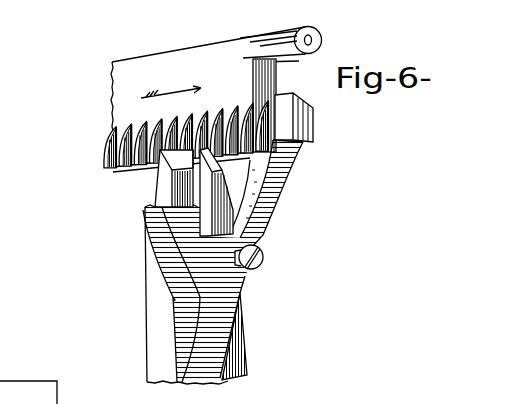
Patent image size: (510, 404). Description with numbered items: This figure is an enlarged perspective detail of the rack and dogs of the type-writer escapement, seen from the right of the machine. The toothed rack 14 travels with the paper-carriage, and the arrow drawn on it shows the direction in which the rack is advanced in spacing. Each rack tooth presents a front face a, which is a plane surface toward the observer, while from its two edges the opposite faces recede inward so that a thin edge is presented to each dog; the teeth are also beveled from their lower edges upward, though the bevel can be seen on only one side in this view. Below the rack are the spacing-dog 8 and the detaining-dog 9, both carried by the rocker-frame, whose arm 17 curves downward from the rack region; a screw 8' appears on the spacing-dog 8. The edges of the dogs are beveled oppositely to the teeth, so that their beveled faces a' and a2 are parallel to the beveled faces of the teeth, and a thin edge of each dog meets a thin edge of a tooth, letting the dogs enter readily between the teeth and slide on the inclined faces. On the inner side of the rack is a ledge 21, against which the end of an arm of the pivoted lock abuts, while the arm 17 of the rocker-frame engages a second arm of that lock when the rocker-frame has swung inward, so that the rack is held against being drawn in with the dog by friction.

The toothed rack bar 14 is at (110, 131).
The ledge 21 is at (314, 125).
The front face a is at (298, 134).
The arm of the rocker-frame 17 is at (288, 170).
The detaining-dog 9 is at (158, 192).
The beveled face a' is at (115, 186).
The beveled face a2 is at (218, 184).
The spacing-dog 8 is at (223, 262).
The screw 8' is at (265, 259).